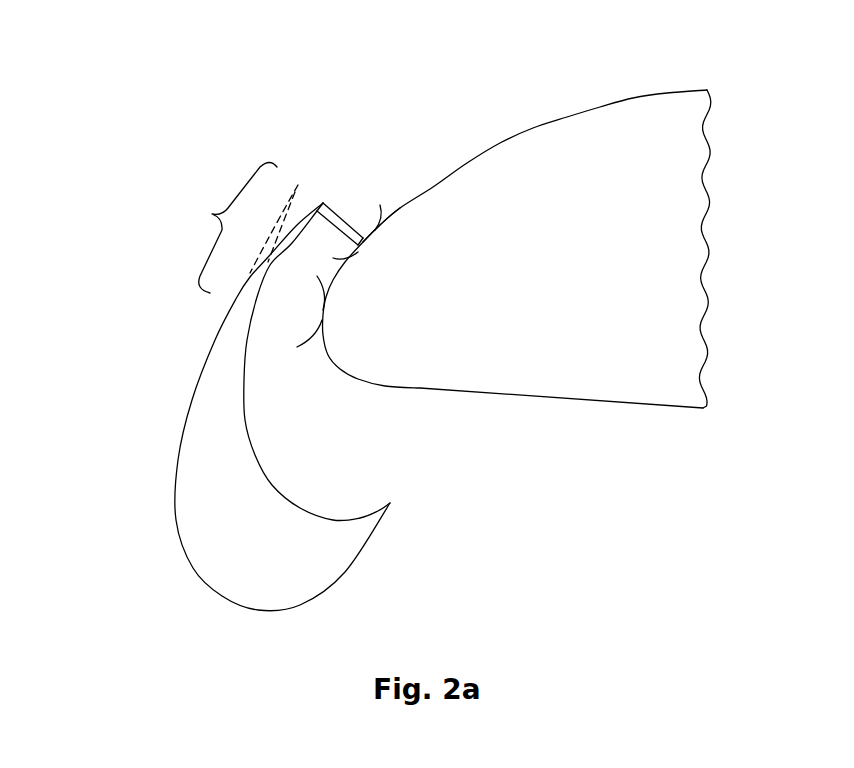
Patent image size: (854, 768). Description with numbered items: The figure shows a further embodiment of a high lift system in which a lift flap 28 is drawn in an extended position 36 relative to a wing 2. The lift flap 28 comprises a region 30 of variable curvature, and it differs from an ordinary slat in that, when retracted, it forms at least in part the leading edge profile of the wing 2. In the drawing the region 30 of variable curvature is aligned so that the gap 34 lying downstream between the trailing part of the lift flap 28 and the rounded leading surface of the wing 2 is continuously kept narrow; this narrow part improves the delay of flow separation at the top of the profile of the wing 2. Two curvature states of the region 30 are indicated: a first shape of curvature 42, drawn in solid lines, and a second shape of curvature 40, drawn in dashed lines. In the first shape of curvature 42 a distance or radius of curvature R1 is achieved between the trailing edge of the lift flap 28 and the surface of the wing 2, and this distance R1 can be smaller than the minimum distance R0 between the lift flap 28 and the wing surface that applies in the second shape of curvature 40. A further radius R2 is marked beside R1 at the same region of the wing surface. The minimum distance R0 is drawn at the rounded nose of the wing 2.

The wing 2 is at (607, 127).
The lift flap 28 is at (300, 563).
The region of variable curvature 30 is at (230, 228).
The gap 34 is at (353, 217).
The extended position 36 is at (147, 407).
The second shape of curvature 40 is at (300, 177).
The first shape of curvature 42 is at (323, 195).
The minimum distance R0 is at (258, 295).
The distance or radius of curvature R1 is at (396, 229).
The second radius R2 is at (361, 268).